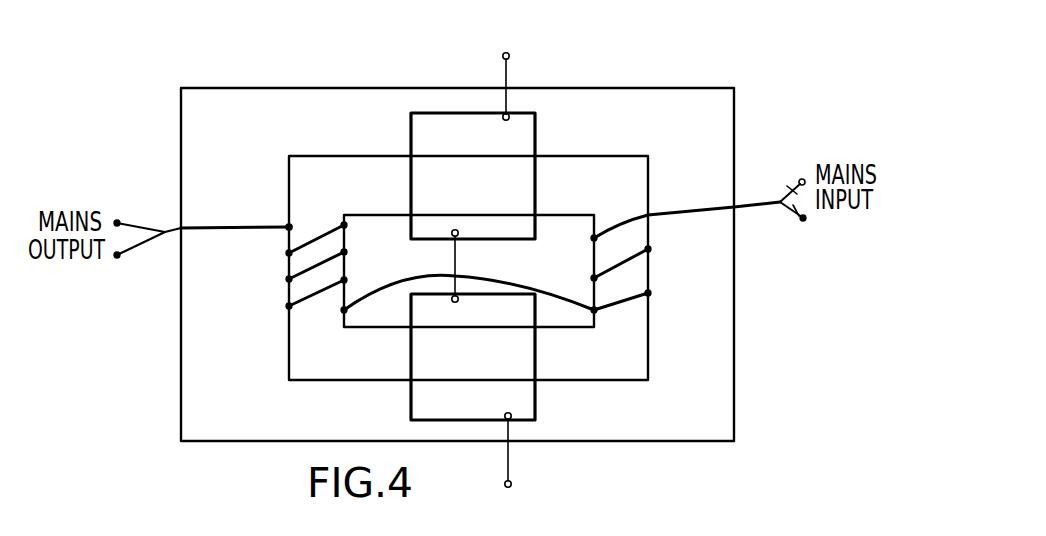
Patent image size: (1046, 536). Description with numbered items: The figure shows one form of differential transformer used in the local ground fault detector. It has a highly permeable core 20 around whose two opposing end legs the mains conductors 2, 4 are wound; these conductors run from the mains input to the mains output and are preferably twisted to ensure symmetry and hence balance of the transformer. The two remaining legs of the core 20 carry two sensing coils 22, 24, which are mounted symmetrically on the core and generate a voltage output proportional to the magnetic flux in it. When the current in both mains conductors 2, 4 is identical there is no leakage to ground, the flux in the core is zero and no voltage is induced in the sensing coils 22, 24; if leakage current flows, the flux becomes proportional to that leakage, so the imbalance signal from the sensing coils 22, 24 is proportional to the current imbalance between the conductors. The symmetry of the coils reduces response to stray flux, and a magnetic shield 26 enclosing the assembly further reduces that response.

The mains conductor 2 is at (788, 183).
The mains conductor 4 is at (789, 222).
The core 20 is at (622, 156).
The sensing coil 22 is at (537, 128).
The sensing coil 24 is at (537, 403).
The magnetic shield 26 is at (734, 94).